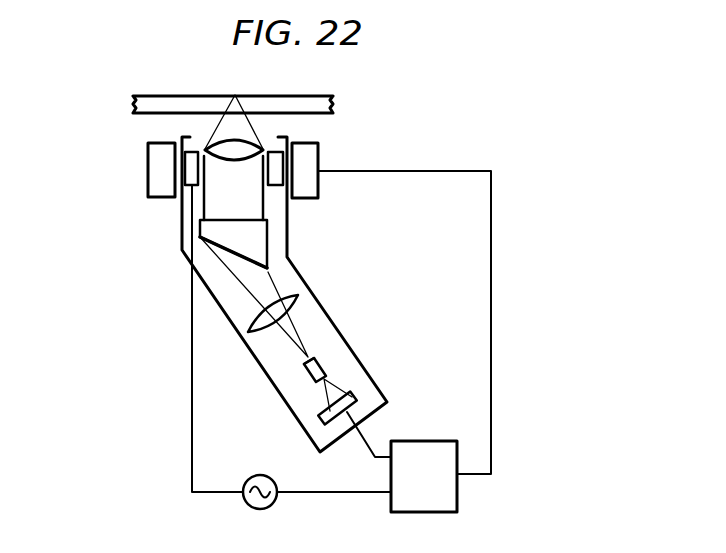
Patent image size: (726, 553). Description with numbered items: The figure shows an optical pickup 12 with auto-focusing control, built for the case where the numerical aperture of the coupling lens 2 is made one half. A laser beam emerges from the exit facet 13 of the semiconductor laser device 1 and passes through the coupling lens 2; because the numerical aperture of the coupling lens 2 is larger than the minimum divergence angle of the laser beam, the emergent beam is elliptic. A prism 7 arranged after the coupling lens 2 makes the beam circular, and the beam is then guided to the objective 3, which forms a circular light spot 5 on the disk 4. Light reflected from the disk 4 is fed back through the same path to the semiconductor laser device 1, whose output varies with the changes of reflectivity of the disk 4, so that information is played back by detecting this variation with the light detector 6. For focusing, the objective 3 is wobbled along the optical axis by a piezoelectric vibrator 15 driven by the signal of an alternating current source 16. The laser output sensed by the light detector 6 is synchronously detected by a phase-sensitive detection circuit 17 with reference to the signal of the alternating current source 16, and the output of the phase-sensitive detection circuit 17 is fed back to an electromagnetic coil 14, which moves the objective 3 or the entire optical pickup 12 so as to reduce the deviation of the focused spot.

The semiconductor laser device 1 is at (327, 367).
The coupling lens 2 is at (297, 302).
The objective 3 is at (249, 149).
The disk 4 is at (326, 94).
The circular light spot 5 is at (237, 93).
The light detector 6 is at (373, 405).
The prism 7 is at (257, 233).
The optical pickup 12 is at (366, 378).
The exit facet 13 is at (312, 348).
The electromagnetic coil 14 is at (160, 188).
The piezoelectric vibrator 15 is at (192, 150).
The alternating current source 16 is at (250, 481).
The phase-sensitive detection circuit 17 is at (447, 492).